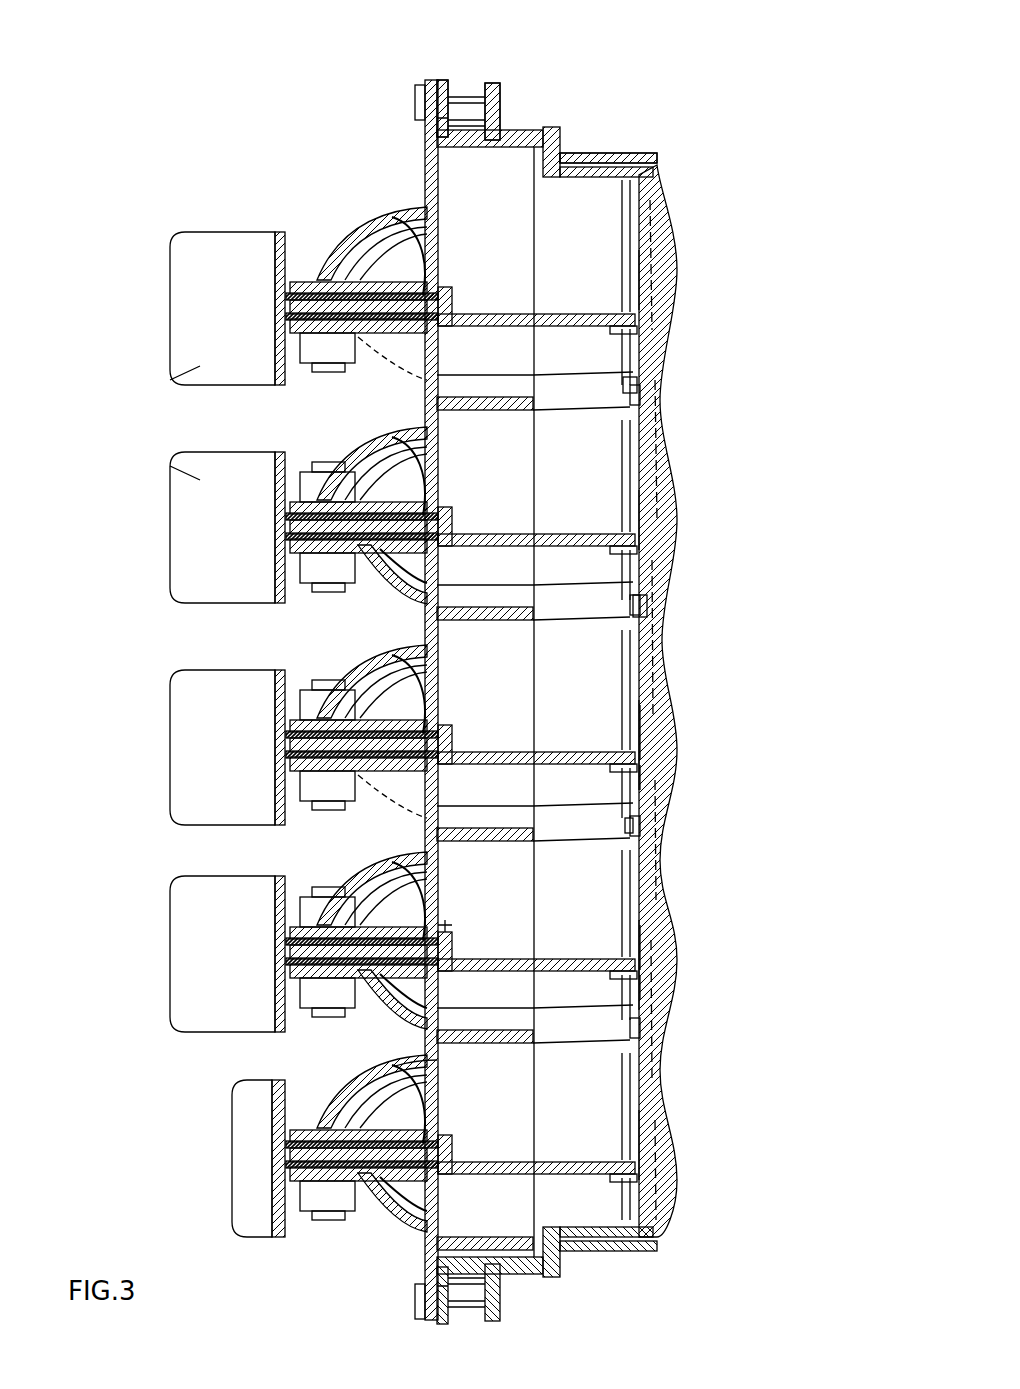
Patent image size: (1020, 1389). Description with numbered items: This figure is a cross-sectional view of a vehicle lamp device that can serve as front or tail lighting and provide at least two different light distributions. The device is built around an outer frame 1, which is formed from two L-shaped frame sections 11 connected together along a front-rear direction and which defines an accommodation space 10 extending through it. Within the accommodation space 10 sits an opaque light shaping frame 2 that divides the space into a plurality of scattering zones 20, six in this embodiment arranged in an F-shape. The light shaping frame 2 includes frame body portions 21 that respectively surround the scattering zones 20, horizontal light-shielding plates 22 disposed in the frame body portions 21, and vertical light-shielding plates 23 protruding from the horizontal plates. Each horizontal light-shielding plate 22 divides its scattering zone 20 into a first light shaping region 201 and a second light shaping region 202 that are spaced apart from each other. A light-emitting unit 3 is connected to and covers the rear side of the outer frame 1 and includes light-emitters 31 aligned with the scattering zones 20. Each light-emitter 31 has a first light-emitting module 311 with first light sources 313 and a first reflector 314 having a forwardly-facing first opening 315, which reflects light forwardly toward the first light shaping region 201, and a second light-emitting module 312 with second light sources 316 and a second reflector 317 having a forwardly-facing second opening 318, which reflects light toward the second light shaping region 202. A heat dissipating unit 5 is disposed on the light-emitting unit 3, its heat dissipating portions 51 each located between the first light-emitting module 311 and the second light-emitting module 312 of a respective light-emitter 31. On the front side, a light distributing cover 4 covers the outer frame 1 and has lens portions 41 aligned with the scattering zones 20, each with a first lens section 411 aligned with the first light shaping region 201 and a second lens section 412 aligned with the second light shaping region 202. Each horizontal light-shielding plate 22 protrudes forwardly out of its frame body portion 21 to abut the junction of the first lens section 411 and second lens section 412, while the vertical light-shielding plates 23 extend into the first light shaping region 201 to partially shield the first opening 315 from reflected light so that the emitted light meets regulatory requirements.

The outer frame 1 is at (500, 27).
The frame sections 11 is at (495, 83).
The light shaping frame 2 is at (543, 133).
The accommodation space 10 is at (603, 153).
The light-emitting unit 3 is at (418, 182).
The light distributing cover 4 is at (673, 172).
The heat dissipating unit 5 is at (170, 215).
The heat dissipating portions 51 is at (200, 483).
The scattering zones 20 is at (752, 248).
The first light shaping region 201 is at (590, 288).
The second light shaping region 202 is at (603, 352).
The frame body portions 21 is at (623, 400).
The horizontal light-shielding plates 22 is at (547, 313).
The vertical light-shielding plates 23 is at (443, 300).
The light-emitters 31 is at (352, 228).
The first light-emitting module 311 is at (353, 445).
The second light-emitting module 312 is at (365, 590).
The first light sources 313 is at (418, 511).
The first reflector 314 is at (407, 445).
The first opening 315 is at (425, 925).
The second light sources 316 is at (367, 543).
The second reflector 317 is at (393, 590).
The second opening 318 is at (395, 1066).
The lens portions 41 is at (752, 712).
The first lens section 411 is at (670, 713).
The second lens section 412 is at (663, 772).